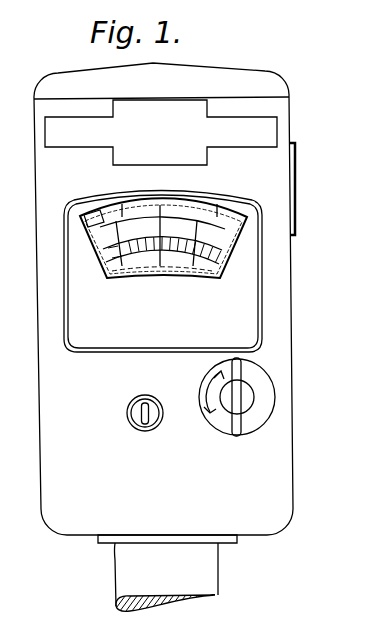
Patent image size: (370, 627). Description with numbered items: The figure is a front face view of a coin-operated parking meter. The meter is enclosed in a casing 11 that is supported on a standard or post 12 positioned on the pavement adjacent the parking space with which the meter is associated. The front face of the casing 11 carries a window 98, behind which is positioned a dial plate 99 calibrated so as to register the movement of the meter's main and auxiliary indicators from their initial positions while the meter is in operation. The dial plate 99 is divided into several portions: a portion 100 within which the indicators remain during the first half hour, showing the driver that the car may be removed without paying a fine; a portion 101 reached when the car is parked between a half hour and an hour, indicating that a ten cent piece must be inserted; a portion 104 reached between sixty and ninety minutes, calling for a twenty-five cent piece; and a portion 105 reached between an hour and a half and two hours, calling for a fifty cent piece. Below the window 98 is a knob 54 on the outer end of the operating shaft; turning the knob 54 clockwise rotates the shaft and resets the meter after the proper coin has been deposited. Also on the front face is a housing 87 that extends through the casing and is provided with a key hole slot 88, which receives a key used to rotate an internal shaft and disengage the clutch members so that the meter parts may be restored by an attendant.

The casing 11 is at (286, 474).
The standard or post 12 is at (205, 564).
The knob 54 is at (241, 374).
The housing 87 is at (135, 415).
The key hole slot 88 is at (150, 418).
The window 98 is at (228, 262).
The dial plate 99 is at (247, 215).
The portion of the dial 100 is at (89, 221).
The portion of the dial plate 101 is at (157, 186).
The portion of the dial 104 is at (183, 204).
The portion of the dial 105 is at (240, 223).